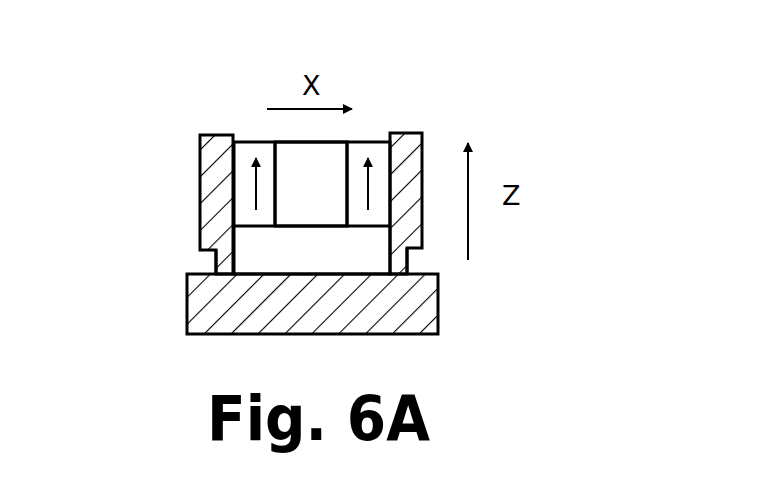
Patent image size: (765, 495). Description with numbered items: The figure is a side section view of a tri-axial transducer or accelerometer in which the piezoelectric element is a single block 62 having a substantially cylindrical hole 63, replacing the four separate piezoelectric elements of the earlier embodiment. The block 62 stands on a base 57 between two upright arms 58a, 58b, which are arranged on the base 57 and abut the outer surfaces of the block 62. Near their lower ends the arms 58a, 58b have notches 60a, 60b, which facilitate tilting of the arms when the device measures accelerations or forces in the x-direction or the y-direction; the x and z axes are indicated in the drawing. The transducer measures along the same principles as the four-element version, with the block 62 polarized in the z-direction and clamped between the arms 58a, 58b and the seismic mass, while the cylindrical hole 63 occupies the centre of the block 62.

The base 57 is at (412, 315).
The arm 58a is at (408, 152).
The arm 58b is at (214, 168).
The notch 60a is at (412, 256).
The notch 60b is at (210, 263).
The block 62 is at (374, 218).
The cylindrical hole 63 is at (299, 164).